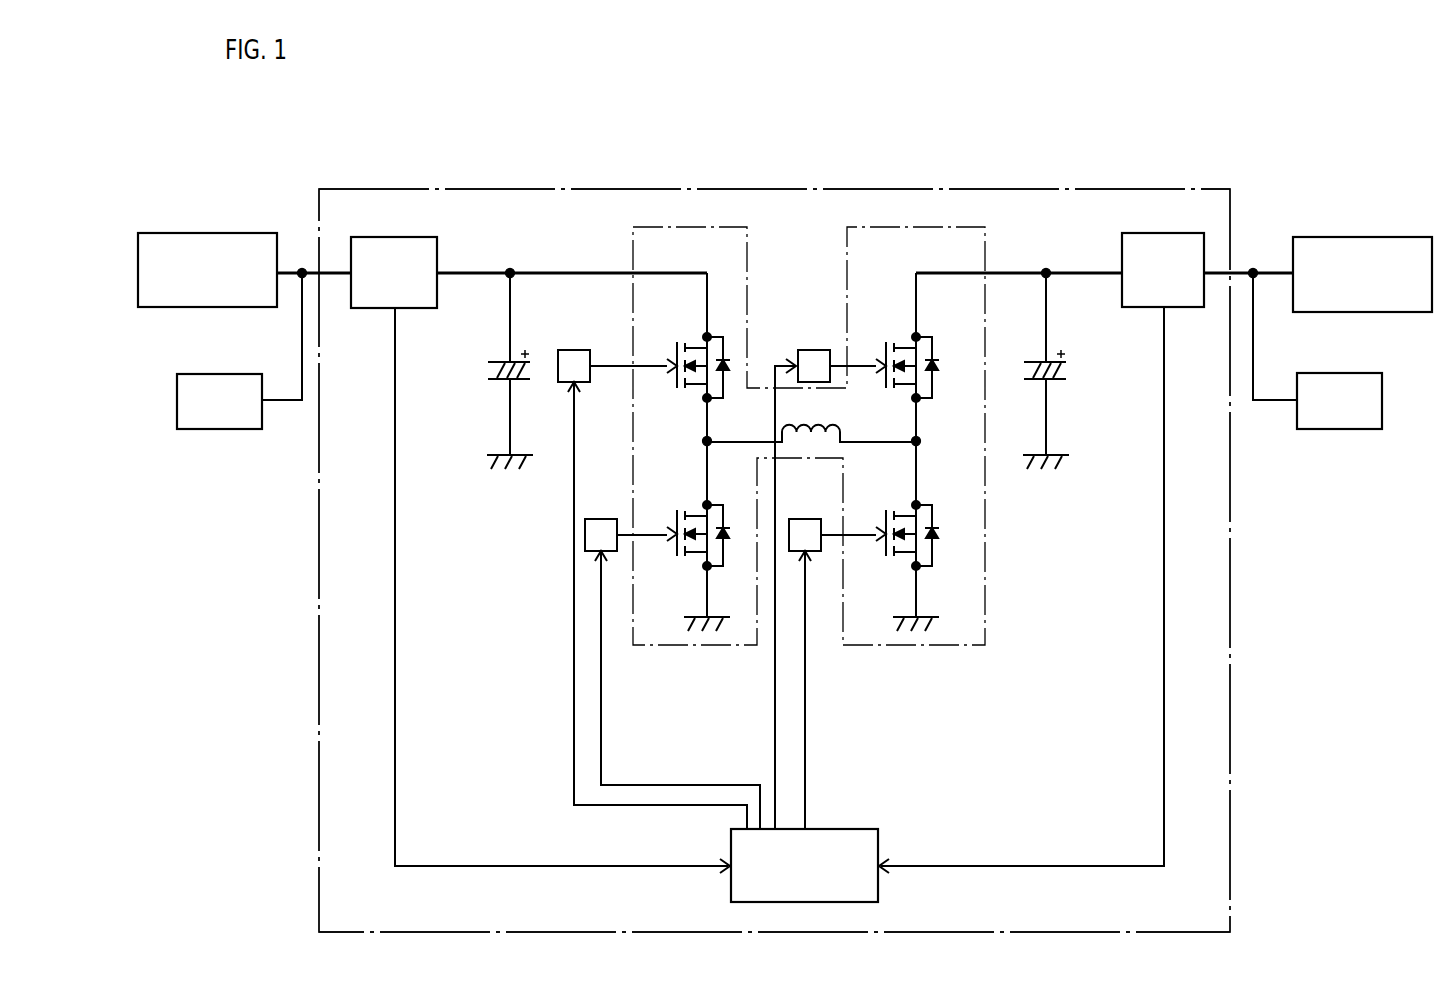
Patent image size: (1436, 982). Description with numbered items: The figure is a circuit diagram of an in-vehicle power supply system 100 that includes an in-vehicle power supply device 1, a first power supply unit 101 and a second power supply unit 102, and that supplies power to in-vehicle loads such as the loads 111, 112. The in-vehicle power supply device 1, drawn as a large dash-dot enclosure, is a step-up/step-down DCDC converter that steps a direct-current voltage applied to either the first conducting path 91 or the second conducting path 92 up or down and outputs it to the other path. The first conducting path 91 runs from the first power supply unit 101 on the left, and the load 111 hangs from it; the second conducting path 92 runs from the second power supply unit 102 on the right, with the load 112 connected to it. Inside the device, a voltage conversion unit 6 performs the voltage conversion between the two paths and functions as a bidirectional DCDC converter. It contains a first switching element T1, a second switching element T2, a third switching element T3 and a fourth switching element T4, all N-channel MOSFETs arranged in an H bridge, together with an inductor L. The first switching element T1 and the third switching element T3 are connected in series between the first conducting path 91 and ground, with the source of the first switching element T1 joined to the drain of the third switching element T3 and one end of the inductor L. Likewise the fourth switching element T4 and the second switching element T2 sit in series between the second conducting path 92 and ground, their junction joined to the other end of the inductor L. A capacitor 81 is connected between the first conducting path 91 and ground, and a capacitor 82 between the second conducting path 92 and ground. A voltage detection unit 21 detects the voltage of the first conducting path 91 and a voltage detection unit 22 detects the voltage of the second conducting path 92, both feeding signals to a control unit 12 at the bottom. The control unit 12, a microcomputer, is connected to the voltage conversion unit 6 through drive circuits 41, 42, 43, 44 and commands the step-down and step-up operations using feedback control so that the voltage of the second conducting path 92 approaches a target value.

The in-vehicle power supply system 100 is at (1279, 156).
The in-vehicle power supply device 1 is at (1146, 188).
The voltage conversion unit 6 is at (877, 226).
The control unit 12 is at (853, 829).
The voltage detection unit 21 is at (404, 236).
The voltage detection unit 22 is at (1180, 233).
The drive circuit 41 is at (575, 350).
The drive circuit 42 is at (805, 519).
The drive circuit 43 is at (600, 519).
The drive circuit 44 is at (814, 350).
The first switching element T1 is at (677, 343).
The second switching element T2 is at (886, 512).
The third switching element T3 is at (677, 512).
The fourth switching element T4 is at (886, 343).
The inductor L is at (818, 423).
The capacitor 81 is at (500, 383).
The capacitor 82 is at (1058, 383).
The first conducting path 91 is at (620, 272).
The second conducting path 92 is at (1005, 272).
The first power supply unit 101 is at (199, 308).
The second power supply unit 102 is at (1355, 313).
The load 111 is at (210, 430).
The load 112 is at (1345, 430).